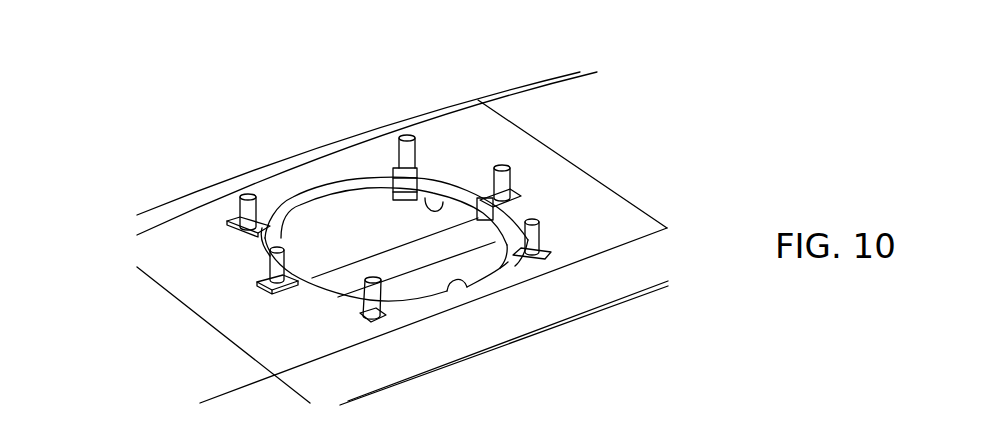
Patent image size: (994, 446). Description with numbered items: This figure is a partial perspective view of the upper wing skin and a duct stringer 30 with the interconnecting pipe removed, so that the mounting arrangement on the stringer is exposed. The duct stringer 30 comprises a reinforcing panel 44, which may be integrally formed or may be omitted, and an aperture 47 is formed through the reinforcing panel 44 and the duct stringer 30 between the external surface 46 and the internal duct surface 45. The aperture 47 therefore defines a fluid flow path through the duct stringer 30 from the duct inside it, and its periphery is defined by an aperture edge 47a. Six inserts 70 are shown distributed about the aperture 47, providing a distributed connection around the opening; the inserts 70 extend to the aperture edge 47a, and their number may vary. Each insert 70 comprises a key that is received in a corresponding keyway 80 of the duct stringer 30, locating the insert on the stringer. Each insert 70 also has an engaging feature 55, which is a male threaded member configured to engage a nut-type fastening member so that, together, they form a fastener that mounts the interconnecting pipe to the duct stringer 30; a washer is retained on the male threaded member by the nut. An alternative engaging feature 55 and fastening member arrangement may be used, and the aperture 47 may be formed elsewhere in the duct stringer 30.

The duct stringer 30 is at (125, 338).
The reinforcing panel 44 is at (580, 193).
The internal duct surface 45 is at (421, 192).
The external surface 46 is at (482, 133).
The aperture 47 is at (341, 222).
The aperture edge 47a is at (458, 284).
The engaging feature 55 is at (538, 240).
The insert 70 is at (508, 177).
The keyway 80 is at (533, 250).